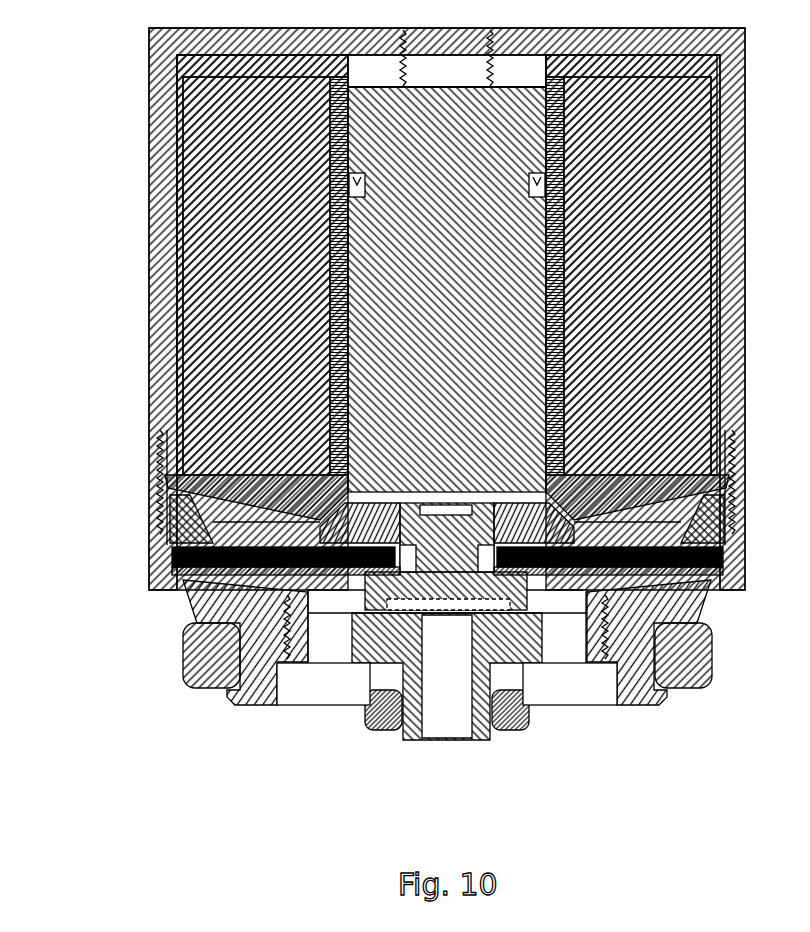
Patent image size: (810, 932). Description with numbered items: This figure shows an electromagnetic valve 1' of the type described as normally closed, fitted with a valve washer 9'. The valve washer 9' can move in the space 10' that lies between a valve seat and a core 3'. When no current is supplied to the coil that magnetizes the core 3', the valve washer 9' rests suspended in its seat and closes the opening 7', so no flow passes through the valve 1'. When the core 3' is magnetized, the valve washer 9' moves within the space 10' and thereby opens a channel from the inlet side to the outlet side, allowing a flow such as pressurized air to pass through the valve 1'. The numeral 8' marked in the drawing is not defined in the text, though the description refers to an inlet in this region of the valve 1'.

The valve 1' is at (385, 400).
The core 3' is at (297, 289).
The opening 7' is at (447, 710).
The plate 8' is at (447, 718).
The valve washer 9' is at (503, 662).
The space 10' is at (544, 624).